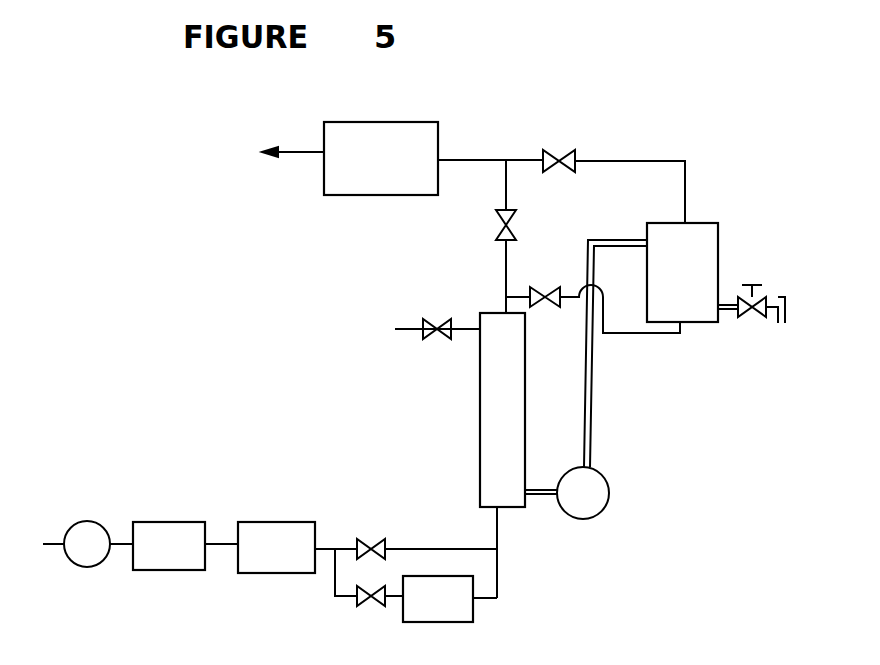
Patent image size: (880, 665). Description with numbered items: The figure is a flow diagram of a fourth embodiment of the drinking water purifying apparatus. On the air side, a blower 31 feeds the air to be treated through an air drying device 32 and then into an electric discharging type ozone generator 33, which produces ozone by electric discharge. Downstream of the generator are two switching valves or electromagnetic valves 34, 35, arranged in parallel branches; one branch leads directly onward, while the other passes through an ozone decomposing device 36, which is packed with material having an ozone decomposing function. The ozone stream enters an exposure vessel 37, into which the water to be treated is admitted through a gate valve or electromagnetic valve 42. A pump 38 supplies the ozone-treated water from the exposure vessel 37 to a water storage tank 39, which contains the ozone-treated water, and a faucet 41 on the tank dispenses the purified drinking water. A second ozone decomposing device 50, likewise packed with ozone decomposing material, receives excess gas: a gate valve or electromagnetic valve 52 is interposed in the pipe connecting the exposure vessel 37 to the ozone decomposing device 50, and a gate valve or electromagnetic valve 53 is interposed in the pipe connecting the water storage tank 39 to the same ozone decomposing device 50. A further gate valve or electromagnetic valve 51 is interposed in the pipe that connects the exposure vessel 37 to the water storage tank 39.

The blower 31 is at (74, 558).
The air drying device 32 is at (154, 561).
The electric discharging type ozone generator 33 is at (261, 562).
The switching valve 34 is at (378, 540).
The switching valve 35 is at (362, 605).
The ozone decomposing device 36 is at (422, 612).
The exposure vessel 37 is at (486, 411).
The pump 38 is at (569, 508).
The water storage tank 39 is at (667, 285).
The faucet 41 is at (743, 322).
The gate valve 42 is at (434, 341).
The ozone decomposing device 50 is at (364, 172).
The gate valve 51 is at (545, 286).
The gate valve 52 is at (500, 232).
The gate valve 53 is at (572, 152).